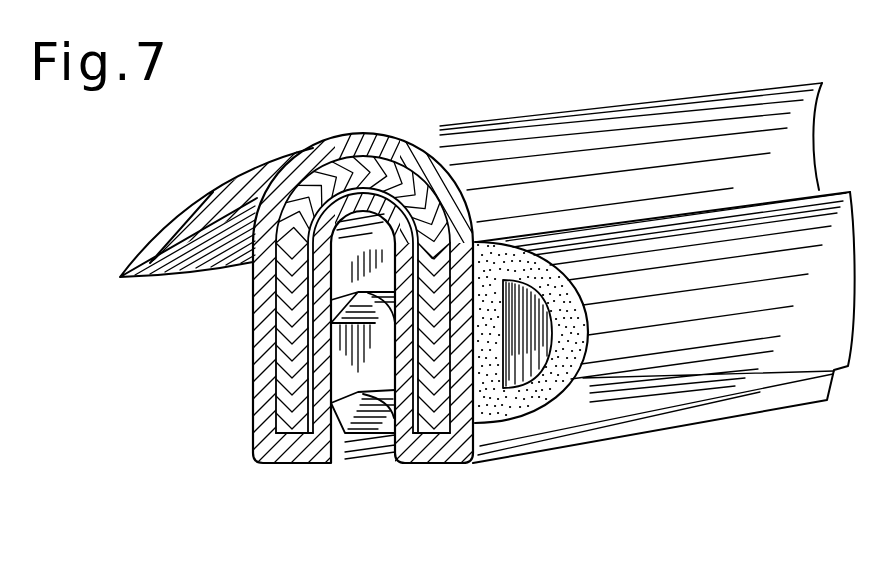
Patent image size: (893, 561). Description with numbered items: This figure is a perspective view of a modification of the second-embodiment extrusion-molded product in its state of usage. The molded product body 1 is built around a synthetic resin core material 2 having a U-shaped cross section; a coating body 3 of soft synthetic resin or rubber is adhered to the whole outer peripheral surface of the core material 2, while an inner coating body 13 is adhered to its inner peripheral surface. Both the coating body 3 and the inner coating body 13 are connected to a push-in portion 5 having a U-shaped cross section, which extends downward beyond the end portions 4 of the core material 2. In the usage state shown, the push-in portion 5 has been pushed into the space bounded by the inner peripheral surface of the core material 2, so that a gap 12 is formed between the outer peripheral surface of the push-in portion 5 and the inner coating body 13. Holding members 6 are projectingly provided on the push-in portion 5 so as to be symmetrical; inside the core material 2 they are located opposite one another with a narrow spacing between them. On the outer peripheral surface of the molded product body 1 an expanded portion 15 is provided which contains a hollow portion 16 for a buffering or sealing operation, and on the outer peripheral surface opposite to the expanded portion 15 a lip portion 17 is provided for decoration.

The molded product body 1 is at (654, 99).
The synthetic resin core material 2 is at (437, 192).
The coating body 3 is at (363, 148).
The end portions 4 is at (443, 433).
The push-in portion 5 is at (323, 353).
The holding members 6 is at (353, 399).
The gap 12 is at (310, 280).
The inner coating body 13 is at (333, 192).
The expanded portion 15 is at (717, 368).
The hollow portion 16 is at (537, 337).
The lip portion 17 is at (198, 212).